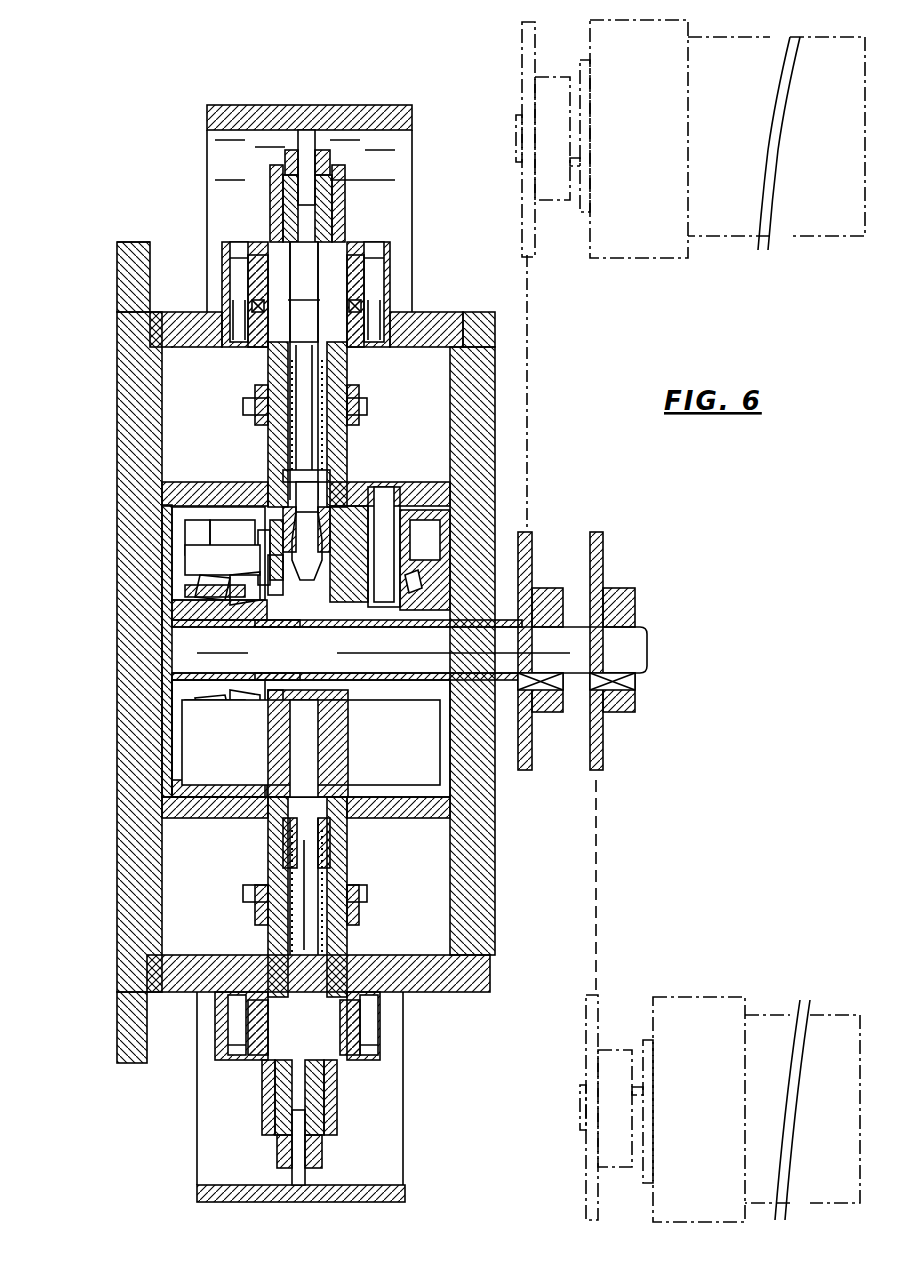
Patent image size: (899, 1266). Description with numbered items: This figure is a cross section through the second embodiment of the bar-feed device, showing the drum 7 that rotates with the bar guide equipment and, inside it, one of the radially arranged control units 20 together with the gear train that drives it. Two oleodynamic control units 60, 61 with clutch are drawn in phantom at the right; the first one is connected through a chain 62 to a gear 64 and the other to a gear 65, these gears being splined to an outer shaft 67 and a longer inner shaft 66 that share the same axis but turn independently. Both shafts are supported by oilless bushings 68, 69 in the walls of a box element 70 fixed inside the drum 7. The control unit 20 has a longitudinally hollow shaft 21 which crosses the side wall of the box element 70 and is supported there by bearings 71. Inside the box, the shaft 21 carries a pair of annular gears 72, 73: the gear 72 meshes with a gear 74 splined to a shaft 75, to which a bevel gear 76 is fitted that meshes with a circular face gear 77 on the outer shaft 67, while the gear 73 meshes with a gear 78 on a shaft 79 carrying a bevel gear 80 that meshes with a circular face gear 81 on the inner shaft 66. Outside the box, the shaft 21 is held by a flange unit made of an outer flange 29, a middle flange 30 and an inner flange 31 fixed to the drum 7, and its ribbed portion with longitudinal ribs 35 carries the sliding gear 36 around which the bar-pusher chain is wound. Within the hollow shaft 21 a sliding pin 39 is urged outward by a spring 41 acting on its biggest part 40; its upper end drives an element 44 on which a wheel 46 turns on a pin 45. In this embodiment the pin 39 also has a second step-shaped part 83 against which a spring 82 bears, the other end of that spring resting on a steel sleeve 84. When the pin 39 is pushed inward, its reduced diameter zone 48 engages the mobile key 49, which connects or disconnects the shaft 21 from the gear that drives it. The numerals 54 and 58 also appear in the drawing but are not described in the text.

The drum 7 is at (485, 300).
The control unit 20 is at (430, 410).
The hollow shaft 21 is at (322, 505).
The outer flange 29 is at (355, 290).
The middle flange 30 is at (388, 295).
The inner flange 31 is at (430, 320).
The longitudinal ribs 35 is at (347, 372).
The gear 36 is at (365, 410).
The sliding pin 39 is at (265, 320).
The biggest part 40 is at (300, 295).
The spring 41 is at (268, 378).
The element 44 is at (345, 178).
The pin 45 is at (285, 160).
The wheel 46 is at (300, 132).
The reduced diameter zone 48 is at (285, 820).
The mobile key 49 is at (230, 532).
The mounting plate 54 is at (362, 105).
The lower gear housing 58 is at (190, 818).
The first control unit 60 is at (795, 215).
The second control unit 61 is at (775, 1015).
The chain 62 is at (600, 820).
The gear 64 is at (603, 565).
The gear 65 is at (532, 770).
The inner shaft 66 is at (647, 630).
The outer shaft 67 is at (610, 720).
The oilless bushing 68 is at (210, 670).
The oilless bushing 69 is at (390, 680).
The box element 70 is at (180, 482).
The bearing 71 is at (275, 815).
The annular gear 72 is at (265, 530).
The annular gear 73 is at (220, 593).
The gear 74 is at (440, 560).
The shaft 75 is at (420, 520).
The bevel gear 76 is at (480, 530).
The circular face gear 77 is at (540, 740).
The gear 78 is at (195, 548).
The shaft 79 is at (165, 517).
The bevel gear 80 is at (240, 600).
The circular face gear 81 is at (270, 625).
The spring 82 is at (280, 520).
The second step-shaped part 83 is at (325, 500).
The steel sleeve 84 is at (330, 488).